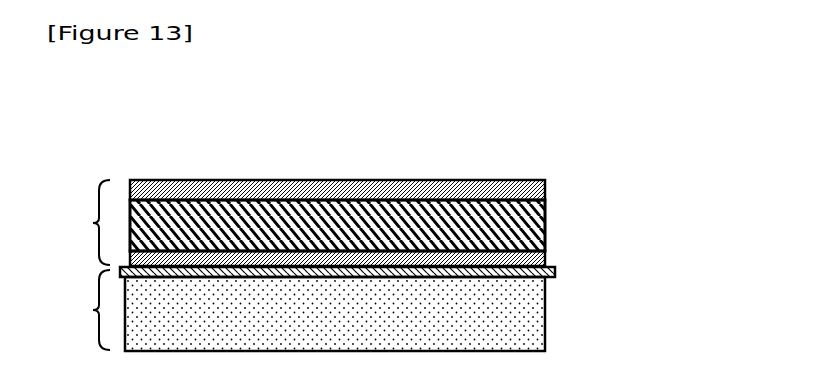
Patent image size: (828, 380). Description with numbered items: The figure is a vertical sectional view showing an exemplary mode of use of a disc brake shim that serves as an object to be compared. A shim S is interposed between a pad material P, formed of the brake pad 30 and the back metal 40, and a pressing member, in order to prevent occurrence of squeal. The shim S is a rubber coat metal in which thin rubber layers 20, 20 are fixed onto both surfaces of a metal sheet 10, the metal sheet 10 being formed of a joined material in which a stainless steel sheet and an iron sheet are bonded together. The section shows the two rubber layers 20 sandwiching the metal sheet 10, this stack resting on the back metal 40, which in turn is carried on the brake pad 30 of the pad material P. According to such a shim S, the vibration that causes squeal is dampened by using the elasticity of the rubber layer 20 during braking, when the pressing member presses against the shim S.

The metal sheet 10 is at (547, 220).
The rubber layer 20 is at (547, 187).
The brake pad 30 is at (533, 310).
The back metal 40 is at (555, 273).
The shim S is at (88, 222).
The pad material P is at (88, 310).